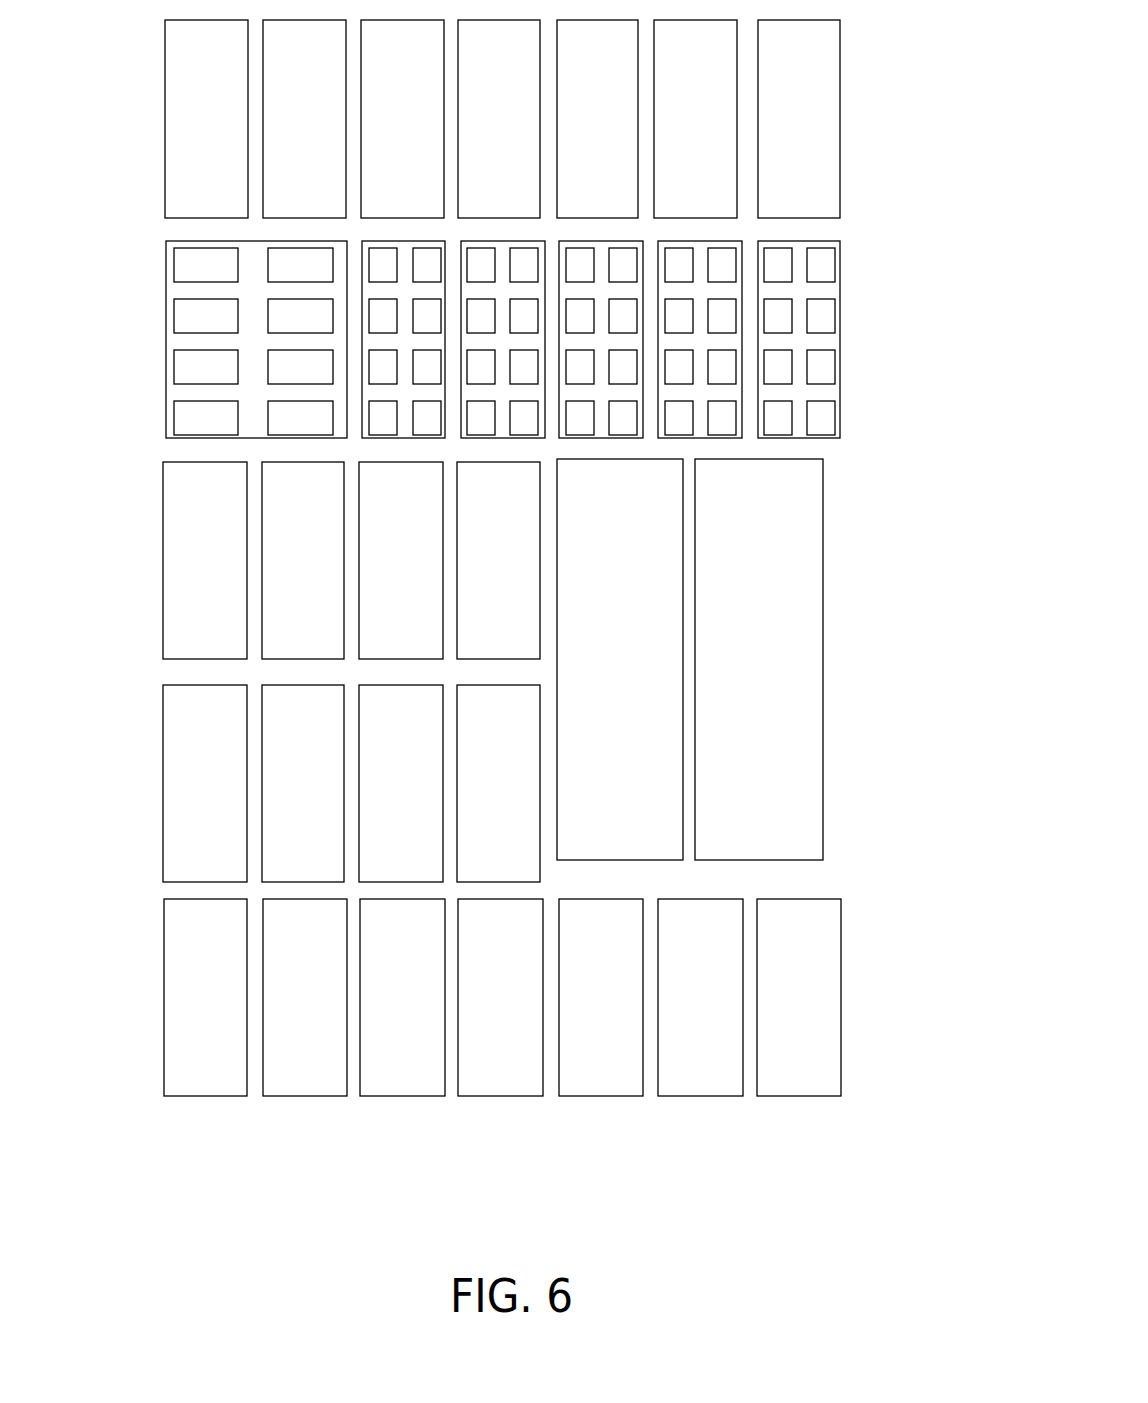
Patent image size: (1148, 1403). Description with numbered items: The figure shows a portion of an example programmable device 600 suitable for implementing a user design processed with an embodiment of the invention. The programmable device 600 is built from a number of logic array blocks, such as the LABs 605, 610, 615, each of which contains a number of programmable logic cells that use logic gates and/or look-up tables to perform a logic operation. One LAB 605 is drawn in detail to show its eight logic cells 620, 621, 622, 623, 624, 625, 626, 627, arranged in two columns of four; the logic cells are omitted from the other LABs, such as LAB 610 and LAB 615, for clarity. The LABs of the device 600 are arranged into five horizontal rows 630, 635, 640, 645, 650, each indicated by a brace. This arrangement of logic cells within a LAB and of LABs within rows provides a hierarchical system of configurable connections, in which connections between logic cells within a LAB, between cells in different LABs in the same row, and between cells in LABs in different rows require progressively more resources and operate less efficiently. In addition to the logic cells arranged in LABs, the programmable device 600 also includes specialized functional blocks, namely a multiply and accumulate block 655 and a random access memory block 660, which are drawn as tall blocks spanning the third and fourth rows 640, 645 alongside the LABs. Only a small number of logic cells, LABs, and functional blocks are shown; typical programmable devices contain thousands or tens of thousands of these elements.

The programmable device 600 is at (510, 600).
The logic array block 605 is at (219, 339).
The logic array block 610 is at (206, 119).
The logic array block 615 is at (810, 1065).
The logic cell 620 is at (206, 418).
The logic cell 621 is at (300, 418).
The logic cell 622 is at (206, 367).
The logic cell 623 is at (300, 367).
The logic cell 624 is at (206, 316).
The logic cell 625 is at (300, 316).
The logic cell 626 is at (300, 265).
The logic cell 627 is at (206, 265).
The row 630 is at (553, 111).
The row 635 is at (516, 339).
The row 640 is at (178, 452).
The row 645 is at (178, 679).
The row 650 is at (460, 1034).
The multiply and accumulate block 655 is at (620, 659).
The random access memory block 660 is at (759, 659).